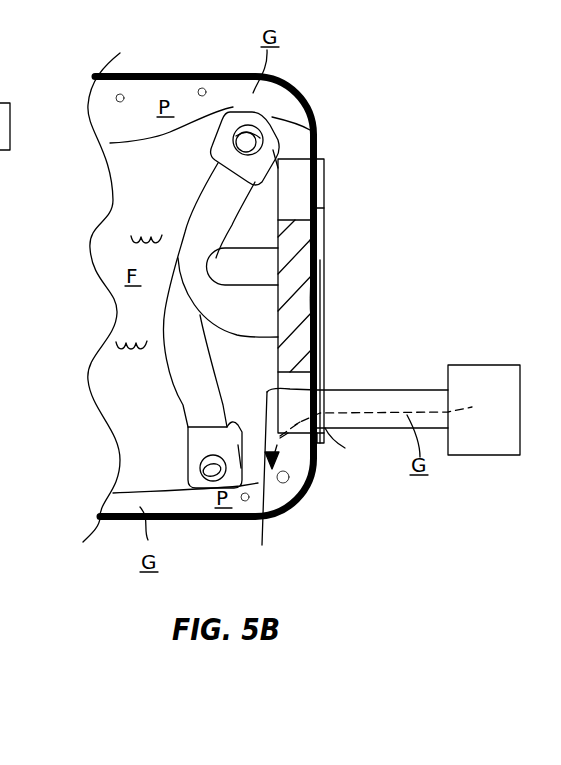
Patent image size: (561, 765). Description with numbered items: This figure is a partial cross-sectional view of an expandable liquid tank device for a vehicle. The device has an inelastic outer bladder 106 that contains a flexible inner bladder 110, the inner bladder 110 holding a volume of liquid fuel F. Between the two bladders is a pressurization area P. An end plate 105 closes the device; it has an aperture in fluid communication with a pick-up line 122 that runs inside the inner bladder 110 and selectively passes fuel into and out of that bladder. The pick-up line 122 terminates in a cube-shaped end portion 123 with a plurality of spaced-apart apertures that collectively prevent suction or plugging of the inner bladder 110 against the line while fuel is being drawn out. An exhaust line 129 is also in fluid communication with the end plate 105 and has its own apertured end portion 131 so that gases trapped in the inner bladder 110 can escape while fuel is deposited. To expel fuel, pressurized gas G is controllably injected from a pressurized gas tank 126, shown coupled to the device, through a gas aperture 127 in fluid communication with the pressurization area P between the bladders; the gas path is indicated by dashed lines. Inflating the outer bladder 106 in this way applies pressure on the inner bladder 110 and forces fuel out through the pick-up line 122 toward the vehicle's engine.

The end plate 105 is at (333, 181).
The outer bladder 106 is at (176, 74).
The flexible inner bladder 110 is at (227, 107).
The pick-up line 122 is at (258, 264).
The end portion 123 is at (183, 450).
The pressurized gas tank 126 is at (477, 455).
The gas aperture 127 is at (345, 448).
The exhaust line 129 is at (217, 213).
The end portion 131 is at (270, 123).